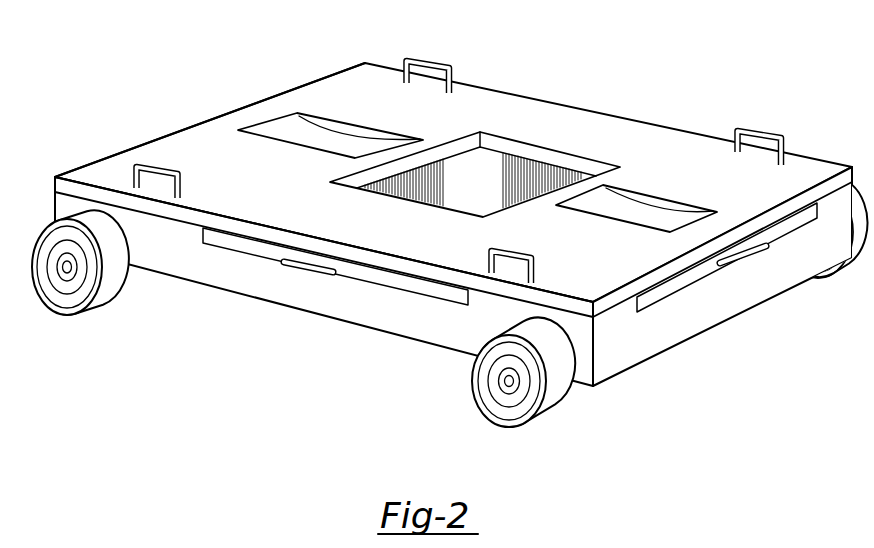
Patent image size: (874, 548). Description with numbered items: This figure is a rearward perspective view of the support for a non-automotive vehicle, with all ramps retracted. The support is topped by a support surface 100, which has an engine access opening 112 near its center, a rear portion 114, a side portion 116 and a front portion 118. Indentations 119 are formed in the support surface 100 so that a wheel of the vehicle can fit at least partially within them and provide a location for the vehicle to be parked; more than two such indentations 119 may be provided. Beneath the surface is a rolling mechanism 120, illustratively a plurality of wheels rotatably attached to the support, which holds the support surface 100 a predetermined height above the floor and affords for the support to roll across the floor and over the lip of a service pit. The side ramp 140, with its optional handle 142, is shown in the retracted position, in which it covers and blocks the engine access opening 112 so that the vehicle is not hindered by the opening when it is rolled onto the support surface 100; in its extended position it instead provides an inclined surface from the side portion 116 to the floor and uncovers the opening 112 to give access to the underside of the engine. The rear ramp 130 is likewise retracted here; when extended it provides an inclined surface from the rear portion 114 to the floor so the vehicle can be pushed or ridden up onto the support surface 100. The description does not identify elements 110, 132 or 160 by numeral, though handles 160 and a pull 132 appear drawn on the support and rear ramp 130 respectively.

The support surface 100 is at (558, 80).
The platform 110 is at (650, 135).
The engine access opening 112 is at (468, 162).
The rear portion 114 is at (813, 175).
The side portion 116 is at (365, 227).
The front portion 118 is at (323, 90).
The indentation 119 is at (348, 140).
The rolling mechanism 120 is at (113, 296).
The rear ramp 130 is at (662, 290).
The drawer handle 132 is at (745, 262).
The side ramp 140 is at (492, 200).
The handle 142 is at (300, 268).
The handle 160 is at (183, 182).